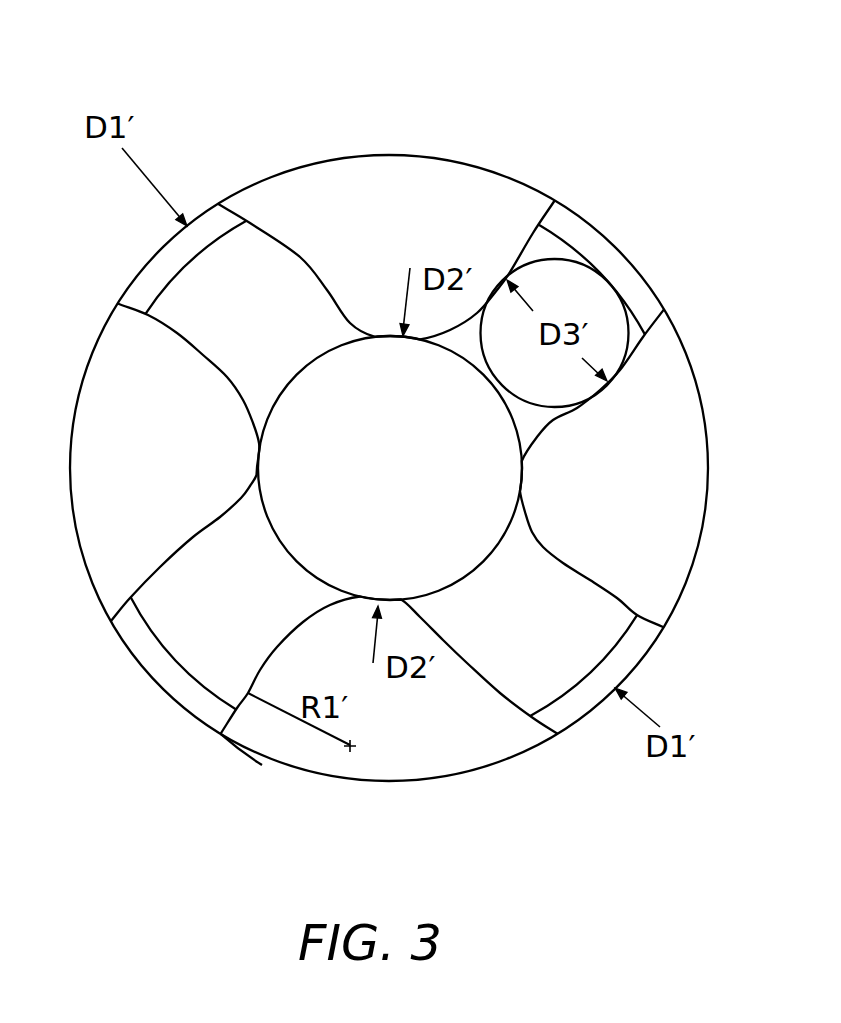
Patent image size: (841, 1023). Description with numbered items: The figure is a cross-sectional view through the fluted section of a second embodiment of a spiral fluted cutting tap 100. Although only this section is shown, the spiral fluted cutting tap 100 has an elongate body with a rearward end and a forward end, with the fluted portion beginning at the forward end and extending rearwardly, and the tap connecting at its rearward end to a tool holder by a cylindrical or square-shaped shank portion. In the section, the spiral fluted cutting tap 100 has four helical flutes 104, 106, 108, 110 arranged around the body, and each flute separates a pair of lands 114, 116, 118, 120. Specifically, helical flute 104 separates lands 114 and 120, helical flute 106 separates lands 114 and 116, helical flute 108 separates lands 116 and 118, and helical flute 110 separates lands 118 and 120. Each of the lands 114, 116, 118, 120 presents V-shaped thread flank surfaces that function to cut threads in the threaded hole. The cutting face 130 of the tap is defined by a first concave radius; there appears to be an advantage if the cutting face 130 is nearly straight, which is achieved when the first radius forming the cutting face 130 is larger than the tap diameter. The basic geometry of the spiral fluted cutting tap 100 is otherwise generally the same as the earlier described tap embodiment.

The spiral fluted cutting tap 100 is at (463, 132).
The helical flute 104 is at (182, 467).
The helical flute 106 is at (411, 252).
The helical flute 108 is at (625, 502).
The helical flute 110 is at (413, 733).
The land 114 is at (155, 258).
The land 116 is at (630, 258).
The land 118 is at (632, 673).
The land 120 is at (143, 673).
The cutting face 130 is at (243, 731).